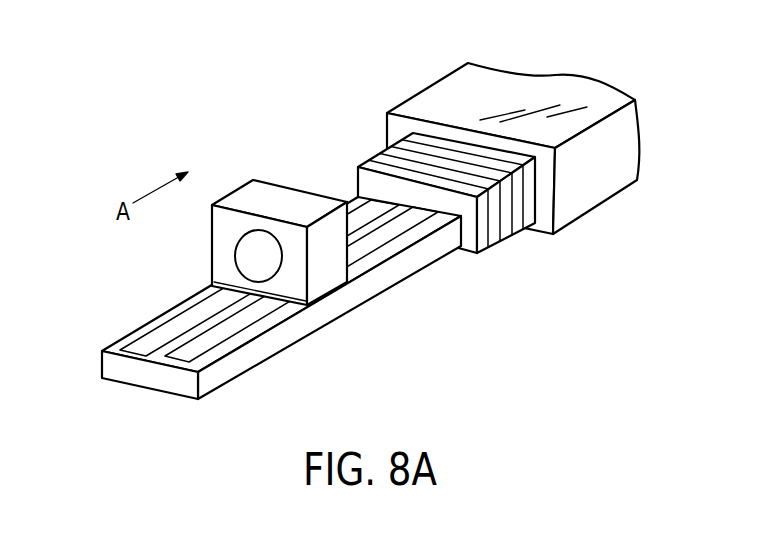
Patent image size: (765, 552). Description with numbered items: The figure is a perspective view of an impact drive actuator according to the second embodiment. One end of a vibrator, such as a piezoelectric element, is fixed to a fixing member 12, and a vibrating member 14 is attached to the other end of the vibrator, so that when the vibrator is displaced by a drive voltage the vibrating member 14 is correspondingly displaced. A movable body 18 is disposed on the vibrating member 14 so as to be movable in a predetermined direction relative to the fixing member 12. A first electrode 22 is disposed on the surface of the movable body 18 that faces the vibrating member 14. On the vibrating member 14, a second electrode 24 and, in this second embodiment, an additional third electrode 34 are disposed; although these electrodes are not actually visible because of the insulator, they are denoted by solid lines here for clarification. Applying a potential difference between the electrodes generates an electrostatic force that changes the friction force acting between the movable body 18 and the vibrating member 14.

The fixing member 12 is at (498, 86).
The vibrating member 14 is at (281, 309).
The movable body 18 is at (259, 221).
The first electrode 22 is at (222, 285).
The second electrode 24 is at (233, 324).
The third electrode 34 is at (155, 338).